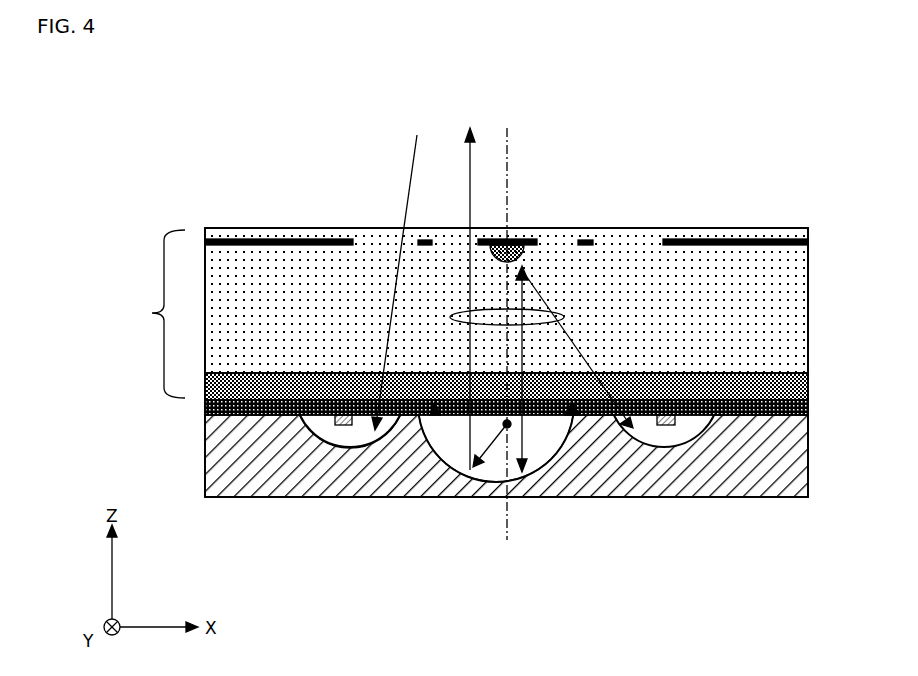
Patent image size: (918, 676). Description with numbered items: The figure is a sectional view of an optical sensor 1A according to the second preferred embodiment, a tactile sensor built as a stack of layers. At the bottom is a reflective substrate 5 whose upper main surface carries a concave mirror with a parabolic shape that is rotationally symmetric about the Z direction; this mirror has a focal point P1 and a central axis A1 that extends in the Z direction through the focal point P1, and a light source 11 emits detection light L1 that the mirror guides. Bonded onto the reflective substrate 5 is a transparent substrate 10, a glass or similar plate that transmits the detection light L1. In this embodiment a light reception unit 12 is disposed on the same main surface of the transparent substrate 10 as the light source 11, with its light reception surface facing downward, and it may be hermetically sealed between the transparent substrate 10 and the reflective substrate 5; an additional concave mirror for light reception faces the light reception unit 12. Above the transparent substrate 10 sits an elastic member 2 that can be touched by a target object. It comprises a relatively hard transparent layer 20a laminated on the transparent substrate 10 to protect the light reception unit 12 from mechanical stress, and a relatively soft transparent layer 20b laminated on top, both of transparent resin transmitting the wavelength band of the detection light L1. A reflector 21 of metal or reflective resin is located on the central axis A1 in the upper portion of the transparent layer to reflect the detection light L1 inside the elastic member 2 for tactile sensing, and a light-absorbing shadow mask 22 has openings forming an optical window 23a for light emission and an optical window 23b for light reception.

The optical sensor 1A is at (152, 179).
The elastic member 2 is at (152, 313).
The reflective substrate 5 is at (479, 411).
The transparent substrate 10 is at (205, 405).
The light source 11 is at (511, 426).
The light reception unit 12 is at (338, 412).
The hard transparent layer 20a is at (801, 383).
The soft transparent layer 20b is at (801, 290).
The reflector 21 is at (530, 255).
The shadow mask 22 is at (753, 240).
The optical window for light emission 23a is at (450, 231).
The optical window for light reception 23b is at (383, 231).
The detection light L1 is at (455, 315).
The focal point P1 is at (507, 420).
The central axis A1 is at (506, 347).